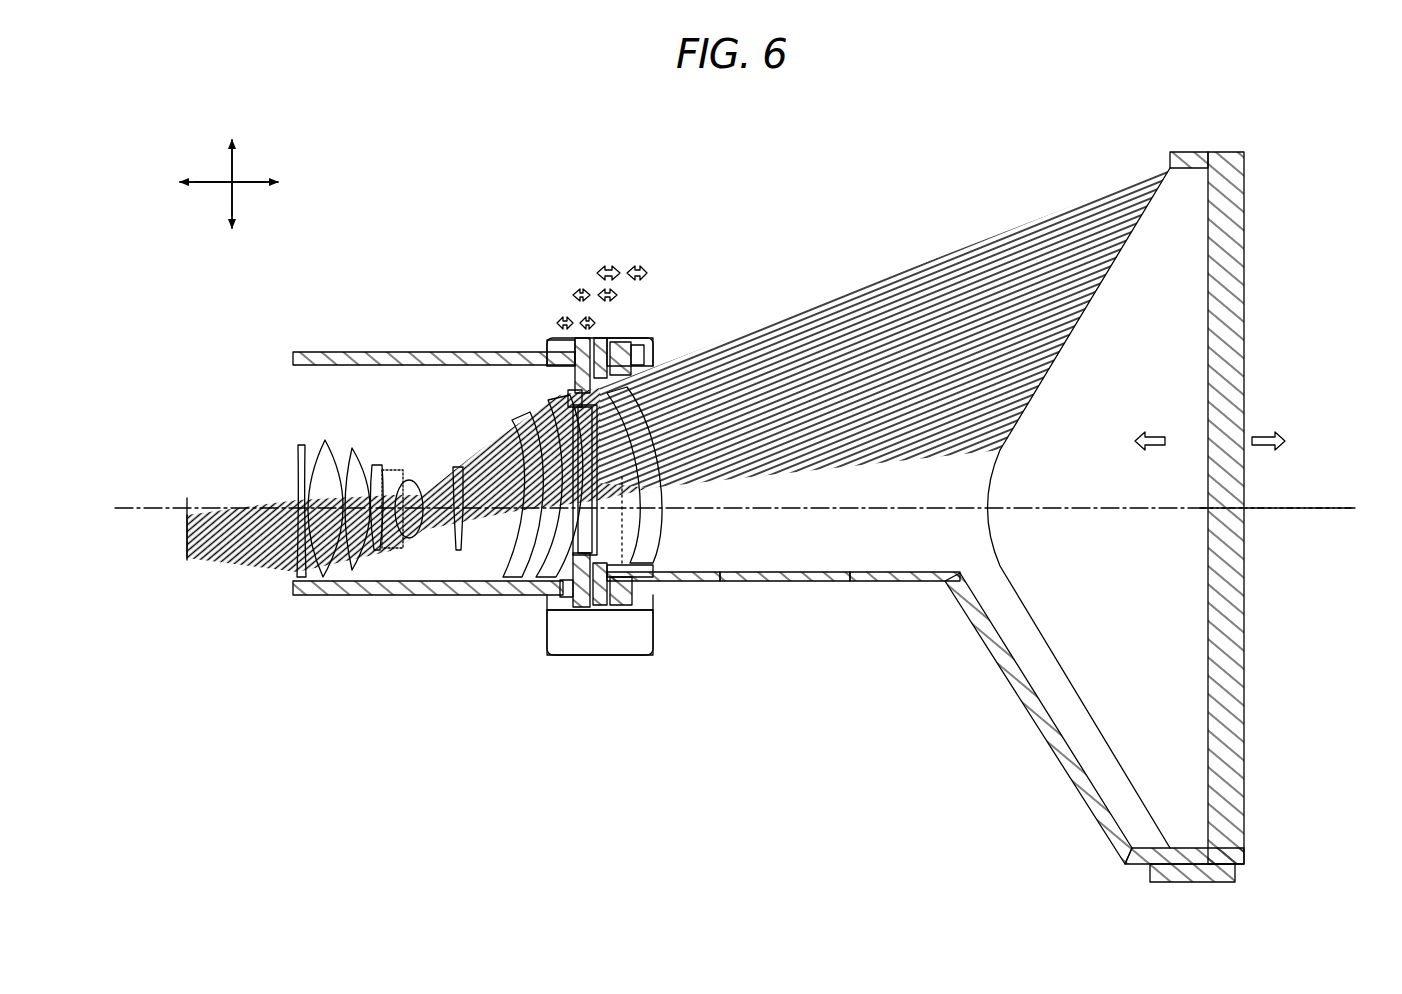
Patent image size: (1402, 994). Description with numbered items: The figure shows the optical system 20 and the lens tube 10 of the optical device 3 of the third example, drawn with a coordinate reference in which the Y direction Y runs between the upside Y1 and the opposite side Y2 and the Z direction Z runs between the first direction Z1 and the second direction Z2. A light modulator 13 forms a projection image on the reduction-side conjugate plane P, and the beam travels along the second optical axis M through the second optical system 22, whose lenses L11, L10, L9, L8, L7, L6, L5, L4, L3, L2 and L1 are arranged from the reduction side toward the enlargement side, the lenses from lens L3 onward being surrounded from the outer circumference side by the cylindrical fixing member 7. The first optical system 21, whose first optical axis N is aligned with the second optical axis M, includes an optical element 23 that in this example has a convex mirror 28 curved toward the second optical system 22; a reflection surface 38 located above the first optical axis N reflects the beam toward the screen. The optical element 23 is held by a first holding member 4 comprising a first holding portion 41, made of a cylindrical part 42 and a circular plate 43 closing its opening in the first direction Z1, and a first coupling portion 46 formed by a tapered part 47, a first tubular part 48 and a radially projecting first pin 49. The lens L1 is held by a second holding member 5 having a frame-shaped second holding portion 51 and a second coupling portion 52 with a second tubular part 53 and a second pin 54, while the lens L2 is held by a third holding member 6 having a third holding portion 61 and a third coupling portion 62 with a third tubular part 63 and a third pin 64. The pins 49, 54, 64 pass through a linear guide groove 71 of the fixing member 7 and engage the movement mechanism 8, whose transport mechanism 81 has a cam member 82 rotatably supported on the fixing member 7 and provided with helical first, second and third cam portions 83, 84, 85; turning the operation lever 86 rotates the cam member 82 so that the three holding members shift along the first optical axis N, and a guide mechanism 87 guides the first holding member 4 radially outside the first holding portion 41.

The optical device 3 is at (990, 138).
The first holding member 4 is at (1236, 470).
The second holding member 5 is at (715, 210).
The third holding member 6 is at (595, 210).
The fixing member 7 is at (400, 352).
The movement mechanism 8 is at (903, 730).
The lens tube 10 is at (470, 225).
The light modulator 13 is at (183, 525).
The optical system 20 is at (682, 597).
The first optical system 21 is at (1050, 670).
The second optical system 22 is at (300, 392).
The optical element 23 is at (1124, 516).
The convex mirror 28 is at (1172, 608).
The reflection surface 38 is at (985, 470).
The first holding portion 41 is at (1302, 110).
The cylindrical part 42 is at (1200, 155).
The circular plate 43 is at (1245, 178).
The first coupling portion 46 is at (845, 718).
The tapered part 47 is at (870, 660).
The first tubular part 48 is at (805, 582).
The first pin 49 is at (655, 592).
The second holding portion 51 is at (628, 345).
The second coupling portion 52 is at (685, 243).
The second tubular part 53 is at (608, 345).
The second pin 54 is at (625, 340).
The third holding portion 61 is at (583, 338).
The third coupling portion 62 is at (570, 243).
The third tubular part 63 is at (572, 345).
The third pin 64 is at (582, 345).
The guide groove 71 is at (560, 378).
The transport mechanism 81 is at (578, 640).
The cam member 82 is at (557, 600).
The first cam portion 83 is at (630, 610).
The second cam portion 84 is at (603, 610).
The third cam portion 85 is at (582, 610).
The operation lever 86 is at (553, 650).
The guide mechanism 87 is at (1205, 873).
The lens L1 is at (655, 560).
The lens L2 is at (592, 520).
The lens L3 is at (535, 420).
The lens L4 is at (503, 422).
The lens L5 is at (457, 467).
The lens L6 is at (410, 480).
The lens L7 is at (392, 468).
The lens L8 is at (372, 465).
The lens L9 is at (355, 572).
The lens L10 is at (323, 578).
The lens L11 is at (302, 574).
The second optical axis M is at (127, 507).
The first optical axis N is at (1320, 500).
The reduction-side conjugate plane P is at (185, 556).
The Y axis Y is at (232, 165).
The upside Y1 is at (229, 169).
The Y2 direction Y2 is at (229, 196).
The Z axis Z is at (250, 186).
The first direction Z1 is at (244, 182).
The second direction Z2 is at (215, 182).